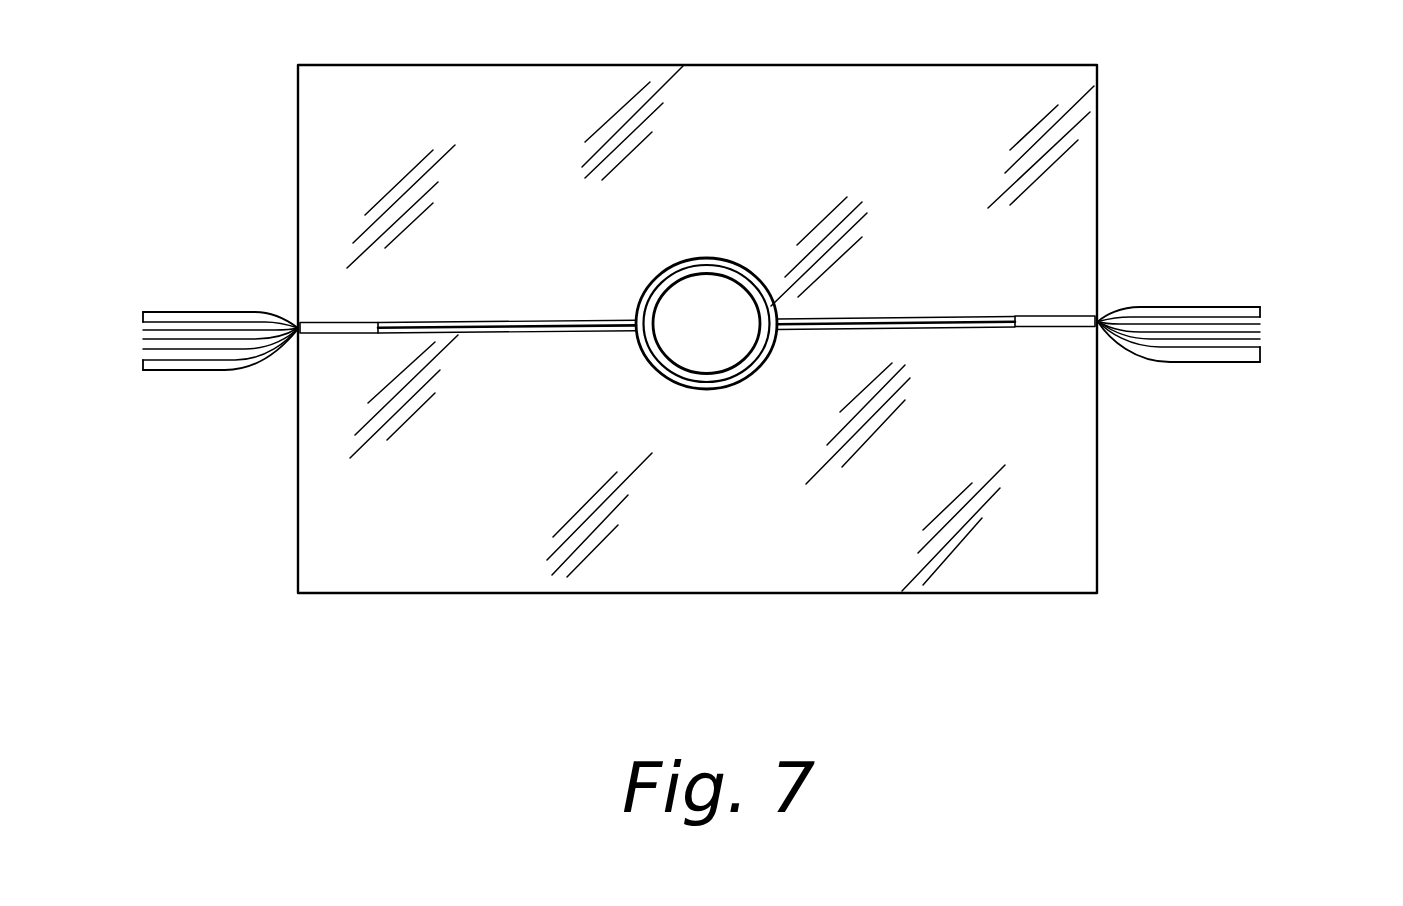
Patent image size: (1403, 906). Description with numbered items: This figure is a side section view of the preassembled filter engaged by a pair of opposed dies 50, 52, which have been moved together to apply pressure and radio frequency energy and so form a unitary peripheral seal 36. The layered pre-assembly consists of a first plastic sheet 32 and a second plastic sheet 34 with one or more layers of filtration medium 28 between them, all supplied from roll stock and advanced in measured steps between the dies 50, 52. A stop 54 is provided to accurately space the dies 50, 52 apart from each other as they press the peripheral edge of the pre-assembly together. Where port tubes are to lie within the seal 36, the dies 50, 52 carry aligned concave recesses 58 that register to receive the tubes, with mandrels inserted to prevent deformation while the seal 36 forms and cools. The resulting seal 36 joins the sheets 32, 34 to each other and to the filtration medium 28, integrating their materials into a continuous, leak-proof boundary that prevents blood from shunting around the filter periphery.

The filtration medium 28 is at (1262, 325).
The first plastic sheet 32 is at (1207, 305).
The second plastic sheet 34 is at (1216, 364).
The peripheral seal 36 is at (928, 334).
The first die 50 is at (1048, 221).
The second die 52 is at (376, 527).
The stop 54 is at (341, 322).
The concave recesses 58 is at (657, 275).